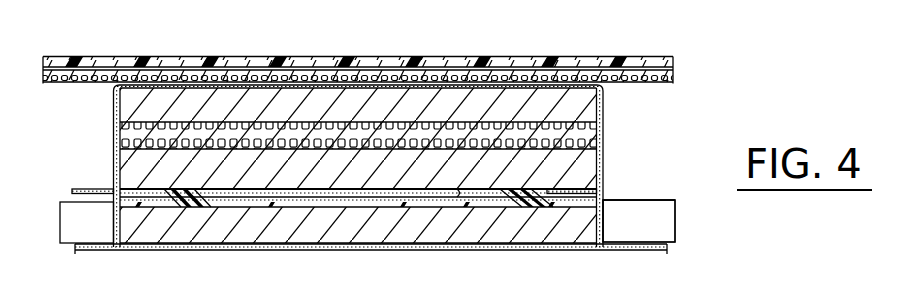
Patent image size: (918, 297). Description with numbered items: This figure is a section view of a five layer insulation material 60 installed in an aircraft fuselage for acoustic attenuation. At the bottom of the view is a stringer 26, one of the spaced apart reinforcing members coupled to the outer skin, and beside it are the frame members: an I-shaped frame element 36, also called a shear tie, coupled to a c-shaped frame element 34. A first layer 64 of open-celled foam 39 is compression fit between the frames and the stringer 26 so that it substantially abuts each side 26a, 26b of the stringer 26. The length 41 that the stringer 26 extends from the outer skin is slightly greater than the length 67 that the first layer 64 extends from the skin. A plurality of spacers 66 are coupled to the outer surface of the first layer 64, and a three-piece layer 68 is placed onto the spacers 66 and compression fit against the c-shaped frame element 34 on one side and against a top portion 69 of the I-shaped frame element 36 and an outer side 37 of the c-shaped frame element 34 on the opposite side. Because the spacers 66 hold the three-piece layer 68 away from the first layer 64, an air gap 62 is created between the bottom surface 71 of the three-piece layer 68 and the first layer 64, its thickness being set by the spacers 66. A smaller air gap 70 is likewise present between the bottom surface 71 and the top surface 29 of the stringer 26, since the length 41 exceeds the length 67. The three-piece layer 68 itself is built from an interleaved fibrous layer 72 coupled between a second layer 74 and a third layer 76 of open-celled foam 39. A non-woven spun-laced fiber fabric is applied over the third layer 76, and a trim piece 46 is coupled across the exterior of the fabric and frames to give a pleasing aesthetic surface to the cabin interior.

The trim piece 46 is at (50, 56).
The third layer of open-celled foam 76 is at (210, 88).
The outer side of c-shaped frame element 37 is at (120, 98).
The c-shaped frame element 34 is at (113, 107).
The interleaved fibrous layer 72 is at (123, 135).
The open-celled foam 39 is at (463, 114).
The second layer of open-celled foam 74 is at (258, 182).
The top portion of I-shaped frame element 69 is at (118, 172).
The top surface of stringer 29 is at (335, 212).
The smaller air gap 70 is at (372, 200).
The air gap 62 is at (386, 197).
The bottom surface of second layer 71 is at (425, 200).
The first layer of insulation material 64 is at (230, 230).
The spacers 66 is at (163, 228).
The length of first layer 67 is at (555, 210).
The three-piece layer 68 is at (607, 87).
The five layer insulation material 60 is at (676, 120).
The stringer 26 is at (494, 203).
The top side of stringer 26a is at (662, 232).
The side of stringer 26b is at (666, 193).
The length of stringer 41 is at (685, 200).
The I-shaped frame element 36 is at (115, 212).